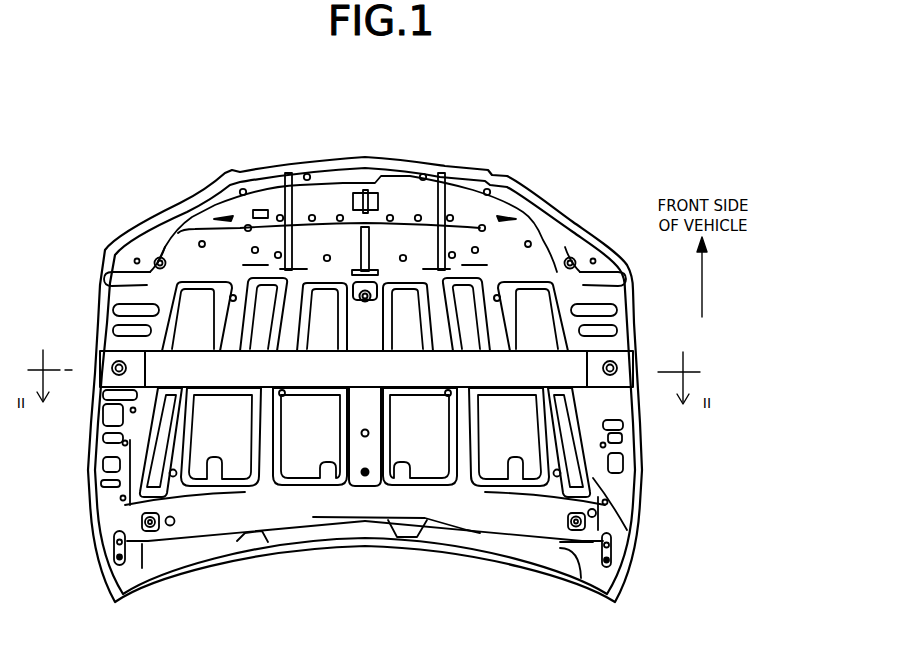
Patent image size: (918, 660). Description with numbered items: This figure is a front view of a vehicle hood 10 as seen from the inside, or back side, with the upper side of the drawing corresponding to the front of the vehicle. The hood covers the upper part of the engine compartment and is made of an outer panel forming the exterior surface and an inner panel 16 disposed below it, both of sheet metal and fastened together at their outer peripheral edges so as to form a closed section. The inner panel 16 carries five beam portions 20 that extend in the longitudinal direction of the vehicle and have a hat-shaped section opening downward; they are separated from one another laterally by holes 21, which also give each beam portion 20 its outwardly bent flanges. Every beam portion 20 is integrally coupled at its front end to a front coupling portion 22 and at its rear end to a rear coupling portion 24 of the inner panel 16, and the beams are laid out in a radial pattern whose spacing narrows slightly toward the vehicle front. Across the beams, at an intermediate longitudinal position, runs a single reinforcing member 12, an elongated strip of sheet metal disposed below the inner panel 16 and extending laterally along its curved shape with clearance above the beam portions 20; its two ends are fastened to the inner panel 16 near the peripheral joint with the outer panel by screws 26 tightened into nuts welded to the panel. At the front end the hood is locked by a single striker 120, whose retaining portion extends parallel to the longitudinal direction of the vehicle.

The vehicle hood 10 is at (551, 165).
The reinforcing member 12 is at (419, 377).
The inner panel 16 is at (148, 228).
The beam portions 20 is at (365, 368).
The holes 21 is at (181, 331).
The front coupling portion 22 is at (417, 250).
The rear coupling portion 24 is at (293, 505).
The screws 26 is at (110, 367).
The striker 120 is at (369, 192).